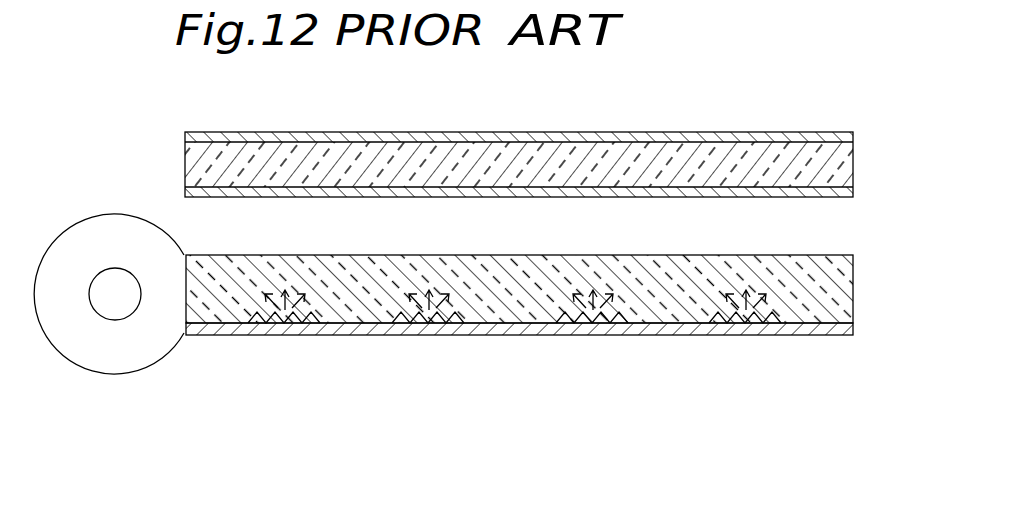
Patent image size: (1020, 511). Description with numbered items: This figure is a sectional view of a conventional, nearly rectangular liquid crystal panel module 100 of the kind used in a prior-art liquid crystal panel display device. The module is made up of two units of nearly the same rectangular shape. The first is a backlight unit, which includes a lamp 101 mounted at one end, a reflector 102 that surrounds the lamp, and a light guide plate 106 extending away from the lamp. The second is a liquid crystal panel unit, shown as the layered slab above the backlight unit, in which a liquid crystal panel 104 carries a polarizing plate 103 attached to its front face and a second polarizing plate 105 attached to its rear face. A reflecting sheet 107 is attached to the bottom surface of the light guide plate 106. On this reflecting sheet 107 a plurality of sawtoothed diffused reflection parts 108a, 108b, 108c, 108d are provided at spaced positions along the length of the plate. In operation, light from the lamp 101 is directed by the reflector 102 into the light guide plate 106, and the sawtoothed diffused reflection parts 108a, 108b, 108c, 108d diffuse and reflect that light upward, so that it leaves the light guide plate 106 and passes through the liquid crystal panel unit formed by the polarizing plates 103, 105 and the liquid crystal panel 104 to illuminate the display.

The liquid crystal panel module 100 is at (423, 122).
The lamp 101 is at (103, 268).
The reflector 102 is at (125, 374).
The polarizing plate 103 is at (585, 131).
The liquid crystal panel 104 is at (722, 155).
The polarizing plate 105 is at (422, 197).
The light guide plate 106 is at (663, 270).
The reflecting sheet 107 is at (822, 335).
The sawtoothed diffused reflection part 108a is at (295, 324).
The sawtoothed diffused reflection part 108b is at (437, 324).
The sawtoothed diffused reflection part 108c is at (583, 324).
The sawtoothed diffused reflection part 108d is at (735, 324).